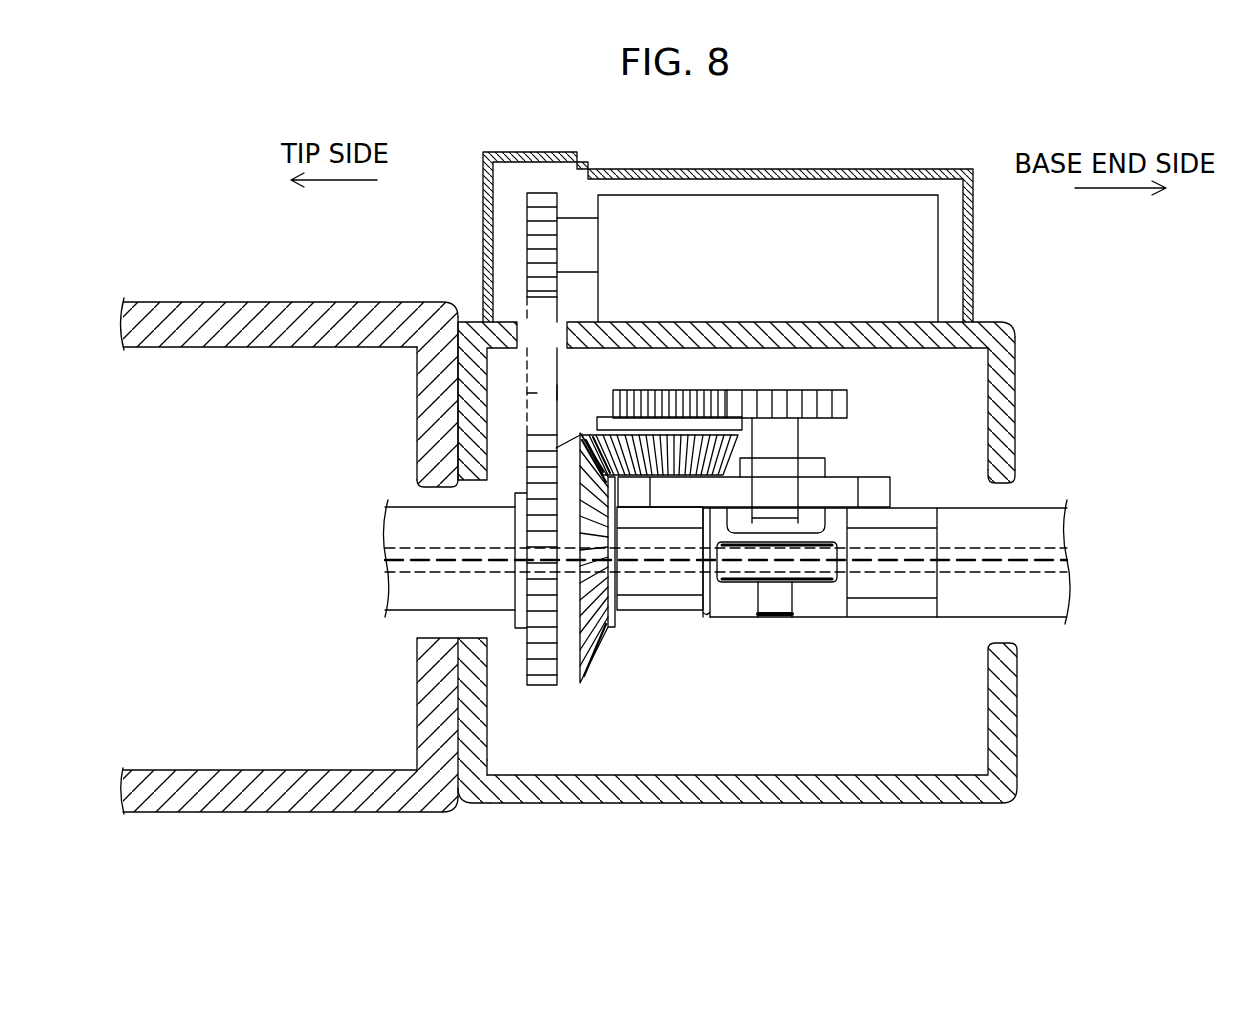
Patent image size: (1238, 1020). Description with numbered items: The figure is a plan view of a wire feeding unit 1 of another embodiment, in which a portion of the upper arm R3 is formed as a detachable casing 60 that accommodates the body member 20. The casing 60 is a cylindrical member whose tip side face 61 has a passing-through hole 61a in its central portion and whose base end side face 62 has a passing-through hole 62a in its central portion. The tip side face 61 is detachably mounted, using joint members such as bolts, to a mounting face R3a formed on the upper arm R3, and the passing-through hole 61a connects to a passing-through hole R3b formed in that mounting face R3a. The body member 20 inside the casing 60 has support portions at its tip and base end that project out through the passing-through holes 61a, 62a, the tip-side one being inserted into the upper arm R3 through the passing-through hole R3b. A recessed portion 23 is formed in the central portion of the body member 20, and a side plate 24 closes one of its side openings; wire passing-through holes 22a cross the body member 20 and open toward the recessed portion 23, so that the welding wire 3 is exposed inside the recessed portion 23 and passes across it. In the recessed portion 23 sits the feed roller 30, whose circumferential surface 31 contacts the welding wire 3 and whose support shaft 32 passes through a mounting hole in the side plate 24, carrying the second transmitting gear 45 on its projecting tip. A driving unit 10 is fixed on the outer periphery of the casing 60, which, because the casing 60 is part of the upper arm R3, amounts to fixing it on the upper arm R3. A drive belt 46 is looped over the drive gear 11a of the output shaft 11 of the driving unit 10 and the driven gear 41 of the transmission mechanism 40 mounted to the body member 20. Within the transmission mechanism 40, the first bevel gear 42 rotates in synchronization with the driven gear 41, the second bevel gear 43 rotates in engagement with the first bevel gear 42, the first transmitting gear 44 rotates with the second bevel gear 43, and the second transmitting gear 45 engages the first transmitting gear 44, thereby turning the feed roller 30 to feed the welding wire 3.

The wire feeding unit 1 is at (796, 373).
The welding wire 3 is at (808, 572).
The driving unit 10 is at (953, 261).
The output shaft 11 is at (577, 227).
The drive gear 11a is at (538, 208).
The body member 20 is at (819, 597).
The wire passing-through hole 22a is at (636, 565).
The recessed portion 23 is at (707, 607).
The side plate 24 is at (883, 490).
The feed roller 30 is at (752, 598).
The circumferential surface 31 is at (800, 585).
The support shaft 32 is at (793, 443).
The transmission mechanism 40 is at (668, 381).
The driven gear 41 is at (543, 686).
The first bevel gear 42 is at (572, 686).
The second bevel gear 43 is at (645, 443).
The first transmitting gear 44 is at (673, 398).
The second transmitting gear 45 is at (826, 398).
The drive belt 46 is at (537, 393).
The casing 60 is at (737, 766).
The tip side face 61 is at (303, 589).
The passing-through hole 61a is at (485, 488).
The base end side face 62 is at (1015, 380).
The passing-through hole 62a is at (1000, 488).
The upper arm R3 is at (287, 796).
The mounting face R3a is at (476, 803).
The passing-through hole R3b is at (437, 482).